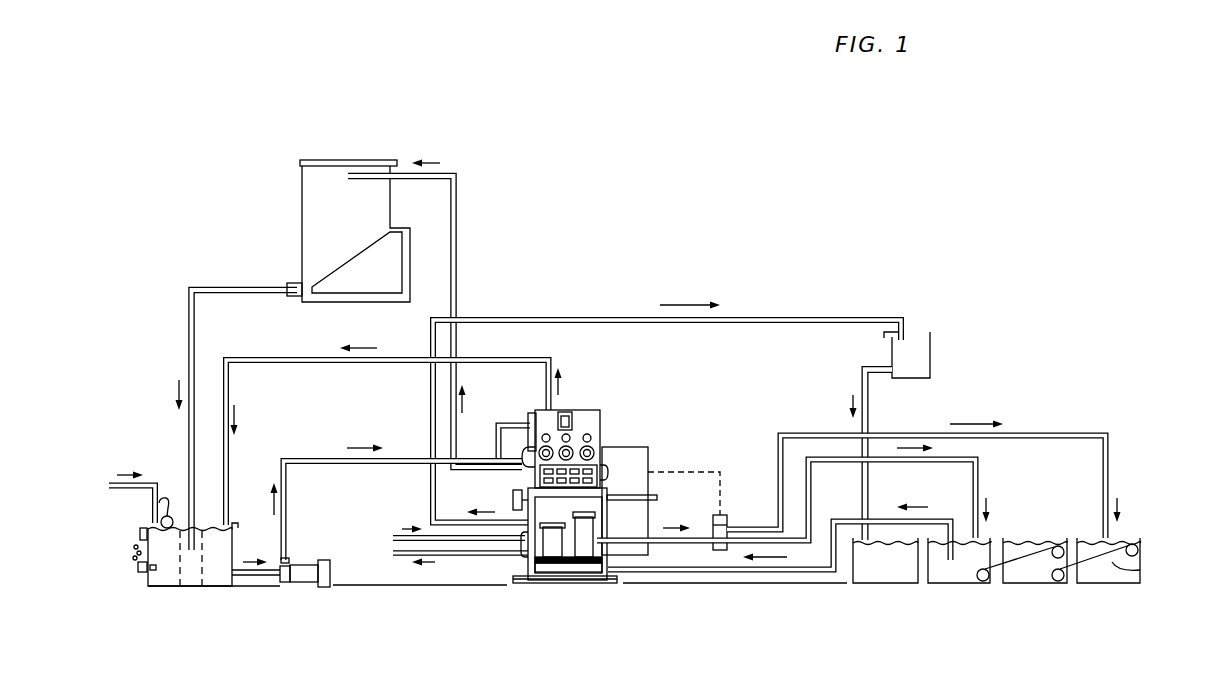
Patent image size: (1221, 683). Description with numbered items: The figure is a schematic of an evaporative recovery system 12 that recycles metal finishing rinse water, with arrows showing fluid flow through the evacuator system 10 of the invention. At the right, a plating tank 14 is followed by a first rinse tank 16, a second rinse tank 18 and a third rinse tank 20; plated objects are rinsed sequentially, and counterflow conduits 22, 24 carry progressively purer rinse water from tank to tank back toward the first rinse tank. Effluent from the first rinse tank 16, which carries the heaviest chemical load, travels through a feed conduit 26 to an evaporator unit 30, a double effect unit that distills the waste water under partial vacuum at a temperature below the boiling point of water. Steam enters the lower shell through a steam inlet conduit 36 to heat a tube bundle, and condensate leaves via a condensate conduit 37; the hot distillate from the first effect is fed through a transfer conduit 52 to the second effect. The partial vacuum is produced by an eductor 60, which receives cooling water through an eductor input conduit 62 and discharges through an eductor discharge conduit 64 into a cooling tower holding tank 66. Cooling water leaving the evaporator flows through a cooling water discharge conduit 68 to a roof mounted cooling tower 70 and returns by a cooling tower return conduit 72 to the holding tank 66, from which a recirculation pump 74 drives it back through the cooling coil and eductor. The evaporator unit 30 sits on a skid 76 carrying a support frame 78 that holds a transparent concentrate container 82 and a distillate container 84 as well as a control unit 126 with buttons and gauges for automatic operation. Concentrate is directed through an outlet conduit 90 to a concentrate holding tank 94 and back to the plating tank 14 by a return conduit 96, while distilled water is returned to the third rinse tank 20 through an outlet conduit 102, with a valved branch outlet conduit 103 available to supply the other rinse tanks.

The evacuator system 10 is at (737, 398).
The evaporative recovery system 12 is at (748, 219).
The plating tank 14 is at (885, 583).
The first rinse tank 16 is at (957, 583).
The second rinse tank 18 is at (1042, 583).
The third rinse tank 20 is at (1117, 583).
The counterflow conduit 22 is at (997, 583).
The counterflow conduit 24 is at (1140, 570).
The feed conduit 26 is at (773, 572).
The evaporator unit 30 is at (577, 504).
The steam inlet conduit 36 is at (393, 537).
The condensate conduit 37 is at (393, 556).
The transfer conduit 52 is at (497, 458).
The eductor 60 is at (536, 423).
The eductor input conduit 62 is at (510, 424).
The eductor discharge conduit 64 is at (527, 358).
The cooling tower holding tank 66 is at (224, 582).
The cooling water discharge conduit 68 is at (505, 473).
The cooling tower 70 is at (322, 202).
The cooling tower return conduit 72 is at (248, 288).
The recirculation pump 74 is at (308, 583).
The skid 76 is at (525, 580).
The support frame 78 is at (607, 557).
The concentrate container 82 is at (550, 543).
The distillate container 84 is at (573, 552).
The outlet conduit 90 is at (820, 317).
The concentrate holding tank 94 is at (930, 365).
The return conduit 96 is at (862, 388).
The outlet conduit 102 is at (1020, 432).
The branch outlet conduit 103 is at (978, 478).
The control unit 126 is at (587, 418).